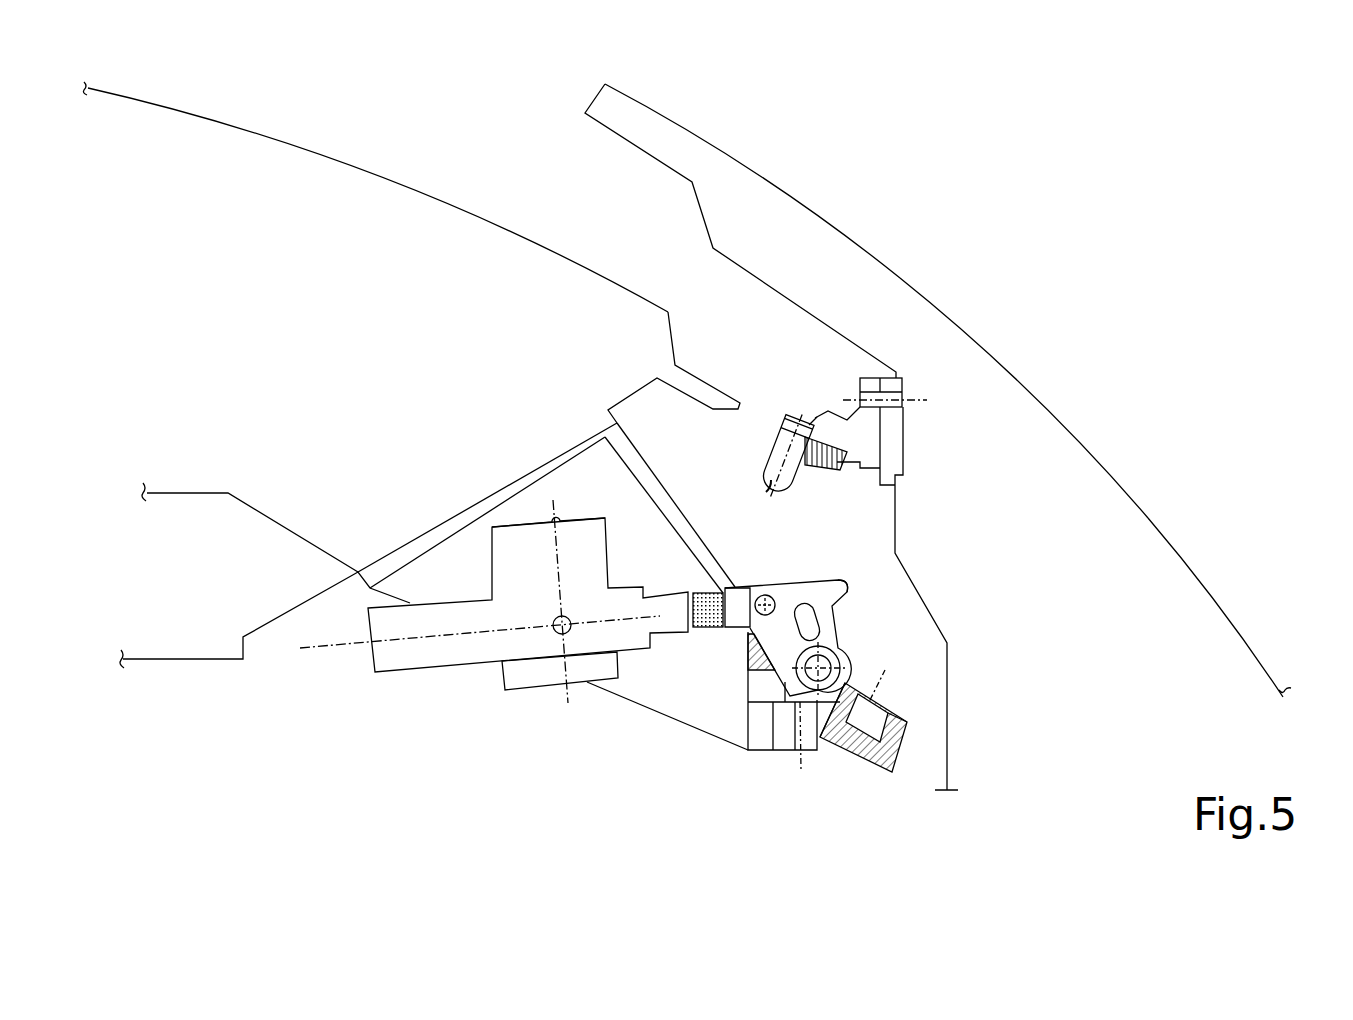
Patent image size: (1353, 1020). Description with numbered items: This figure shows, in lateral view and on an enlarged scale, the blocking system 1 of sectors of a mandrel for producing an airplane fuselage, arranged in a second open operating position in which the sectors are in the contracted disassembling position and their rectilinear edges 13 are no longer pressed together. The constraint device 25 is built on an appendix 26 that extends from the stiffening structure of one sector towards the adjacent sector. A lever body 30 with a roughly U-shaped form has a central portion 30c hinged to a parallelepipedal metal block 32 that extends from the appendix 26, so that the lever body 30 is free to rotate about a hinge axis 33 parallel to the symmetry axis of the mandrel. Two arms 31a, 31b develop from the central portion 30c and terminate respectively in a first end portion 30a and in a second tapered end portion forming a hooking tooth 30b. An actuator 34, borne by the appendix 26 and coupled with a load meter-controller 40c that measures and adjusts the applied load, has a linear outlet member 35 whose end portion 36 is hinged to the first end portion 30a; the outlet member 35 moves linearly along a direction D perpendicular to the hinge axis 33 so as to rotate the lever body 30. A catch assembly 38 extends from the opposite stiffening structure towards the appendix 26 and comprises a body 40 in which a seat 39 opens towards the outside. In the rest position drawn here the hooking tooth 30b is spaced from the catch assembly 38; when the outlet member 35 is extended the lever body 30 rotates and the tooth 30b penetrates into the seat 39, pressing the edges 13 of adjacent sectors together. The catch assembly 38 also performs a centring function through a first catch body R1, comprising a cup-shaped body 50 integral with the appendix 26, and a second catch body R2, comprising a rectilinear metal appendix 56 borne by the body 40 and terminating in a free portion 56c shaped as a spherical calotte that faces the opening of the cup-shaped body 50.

The blocking system 1 is at (761, 382).
The rectilinear edge 13 is at (615, 98).
The constraint device 25 is at (692, 522).
The appendix 26 is at (633, 688).
The lever body 30 is at (805, 576).
The first end portion 30a is at (766, 594).
The hooking tooth 30b is at (848, 586).
The central portion 30c is at (815, 747).
The arm 31a is at (745, 650).
The arm 31b is at (838, 622).
The parallelepipedal metal block 32 is at (775, 690).
The hinge axis 33 is at (817, 715).
The actuator 34 is at (622, 558).
The linear outlet member 35 is at (700, 590).
The end portion 36 is at (740, 622).
The catch assembly 38 is at (827, 390).
The seat 39 is at (815, 418).
The body 40 is at (795, 480).
The load meter-controller 40c is at (515, 677).
The cup-shaped body 50 is at (872, 772).
The rectilinear metal appendix 56 is at (765, 470).
The free portion 56c is at (752, 495).
The direction D is at (325, 647).
The first catch body R1 is at (917, 720).
The second catch body R2 is at (763, 508).